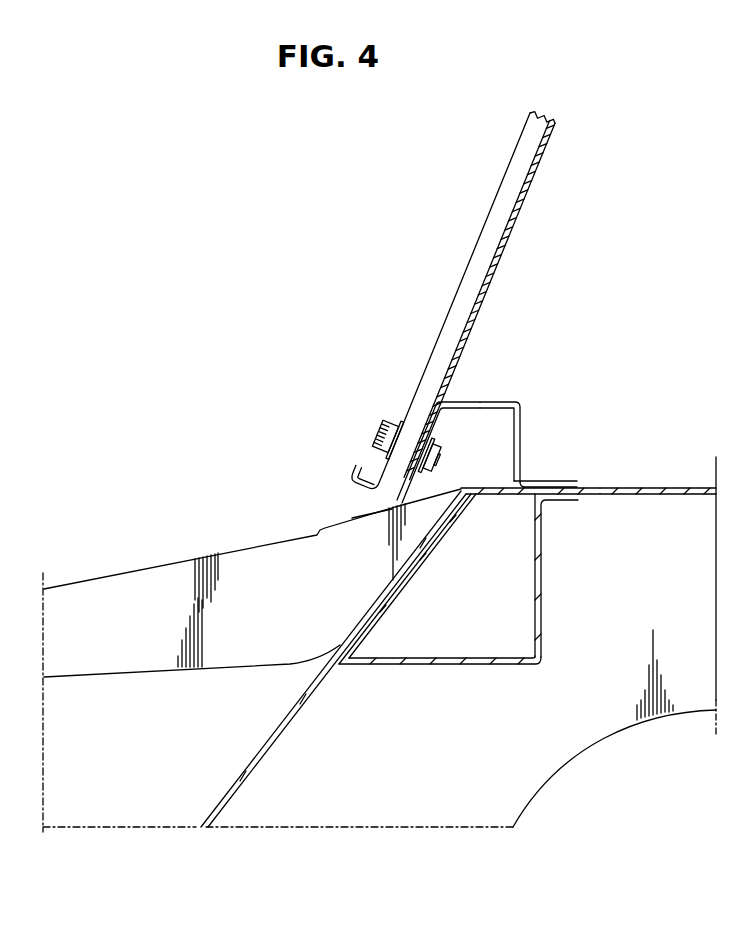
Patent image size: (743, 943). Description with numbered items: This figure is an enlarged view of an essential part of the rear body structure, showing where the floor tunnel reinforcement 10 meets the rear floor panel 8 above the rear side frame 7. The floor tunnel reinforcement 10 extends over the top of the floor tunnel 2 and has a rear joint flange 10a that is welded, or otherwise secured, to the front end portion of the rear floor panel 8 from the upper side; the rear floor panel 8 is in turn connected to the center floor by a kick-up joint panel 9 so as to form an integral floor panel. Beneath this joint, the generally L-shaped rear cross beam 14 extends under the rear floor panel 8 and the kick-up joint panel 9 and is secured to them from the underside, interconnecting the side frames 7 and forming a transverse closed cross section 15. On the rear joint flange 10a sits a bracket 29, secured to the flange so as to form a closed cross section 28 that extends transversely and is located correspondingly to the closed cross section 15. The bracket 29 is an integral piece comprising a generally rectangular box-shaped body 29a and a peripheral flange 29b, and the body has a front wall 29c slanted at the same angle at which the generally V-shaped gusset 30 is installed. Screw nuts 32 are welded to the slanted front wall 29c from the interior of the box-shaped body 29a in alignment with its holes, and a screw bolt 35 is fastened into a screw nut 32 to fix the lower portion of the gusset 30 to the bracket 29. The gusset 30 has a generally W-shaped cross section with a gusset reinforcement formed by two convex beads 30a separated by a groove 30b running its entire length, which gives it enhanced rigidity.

The floor tunnel 2 is at (147, 750).
The rear side frame 7 is at (607, 718).
The rear floor panel 8 is at (648, 490).
The kick-up joint panel 9 is at (258, 753).
The floor tunnel reinforcement 10 is at (124, 576).
The rear joint flange 10a is at (567, 486).
The rear cross beam 14 is at (541, 607).
The closed cross section 15 is at (457, 630).
The closed cross section 28 is at (503, 433).
The bracket 29 is at (497, 425).
The rectangular box-shaped body 29a is at (486, 402).
The peripheral flange 29b is at (537, 477).
The front wall 29c is at (360, 451).
The generally V-shaped gusset 30 is at (433, 293).
The convex beads 30a is at (426, 289).
The groove 30b is at (479, 300).
The screw nuts 32 is at (431, 457).
The screw bolt 35 is at (387, 437).